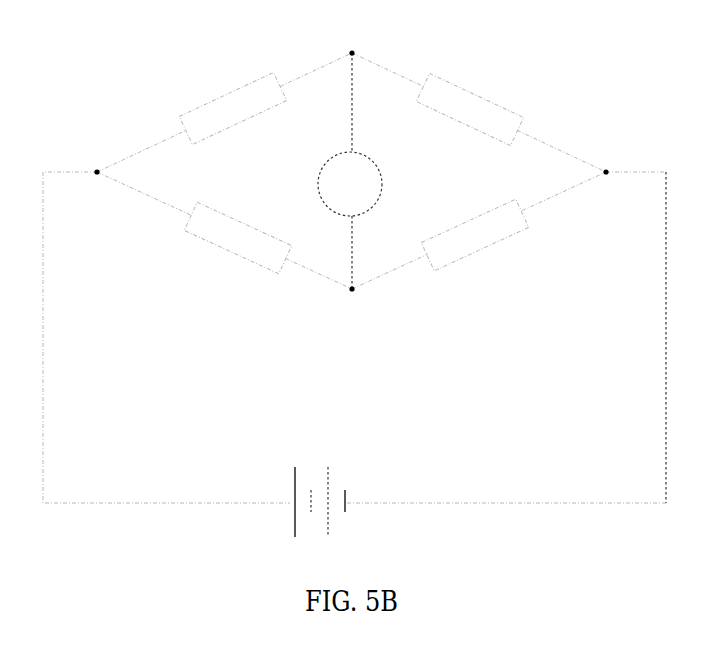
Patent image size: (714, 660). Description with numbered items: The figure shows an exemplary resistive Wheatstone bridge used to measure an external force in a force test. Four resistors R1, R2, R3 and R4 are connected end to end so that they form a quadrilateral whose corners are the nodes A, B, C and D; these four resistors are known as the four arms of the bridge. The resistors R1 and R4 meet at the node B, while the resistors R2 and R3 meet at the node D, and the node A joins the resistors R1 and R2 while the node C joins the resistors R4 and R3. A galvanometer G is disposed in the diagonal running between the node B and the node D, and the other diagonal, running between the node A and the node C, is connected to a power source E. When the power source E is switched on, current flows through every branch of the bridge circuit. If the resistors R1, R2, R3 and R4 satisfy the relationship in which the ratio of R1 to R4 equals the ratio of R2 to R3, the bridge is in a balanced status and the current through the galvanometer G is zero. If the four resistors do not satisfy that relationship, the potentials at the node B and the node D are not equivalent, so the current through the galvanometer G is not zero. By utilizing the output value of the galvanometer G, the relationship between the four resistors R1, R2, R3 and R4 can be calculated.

The vertex A of quadrilateral ABCD A is at (99, 186).
The vertex B of quadrilateral ABCD B is at (353, 38).
The vertex C of quadrilateral ABCD C is at (607, 186).
The vertex D of quadrilateral ABCD D is at (353, 303).
The resistor R1 is at (232, 105).
The resistor R2 is at (237, 239).
The resistor R3 is at (474, 239).
The resistor R4 is at (469, 109).
The galvanometer G is at (350, 184).
The power source E is at (320, 515).